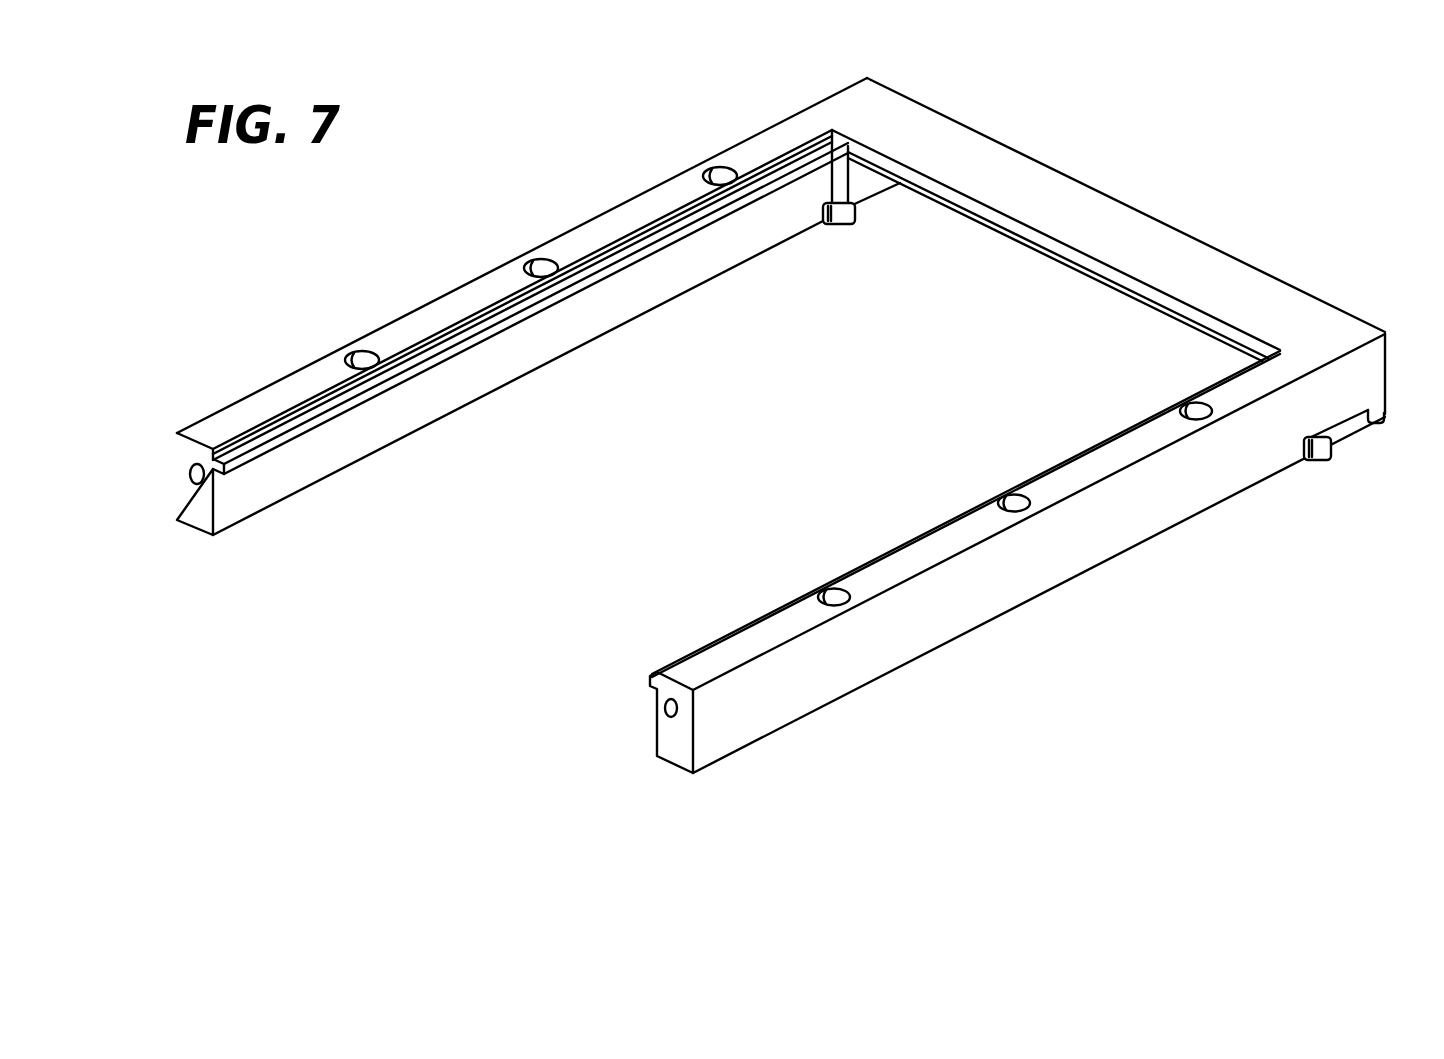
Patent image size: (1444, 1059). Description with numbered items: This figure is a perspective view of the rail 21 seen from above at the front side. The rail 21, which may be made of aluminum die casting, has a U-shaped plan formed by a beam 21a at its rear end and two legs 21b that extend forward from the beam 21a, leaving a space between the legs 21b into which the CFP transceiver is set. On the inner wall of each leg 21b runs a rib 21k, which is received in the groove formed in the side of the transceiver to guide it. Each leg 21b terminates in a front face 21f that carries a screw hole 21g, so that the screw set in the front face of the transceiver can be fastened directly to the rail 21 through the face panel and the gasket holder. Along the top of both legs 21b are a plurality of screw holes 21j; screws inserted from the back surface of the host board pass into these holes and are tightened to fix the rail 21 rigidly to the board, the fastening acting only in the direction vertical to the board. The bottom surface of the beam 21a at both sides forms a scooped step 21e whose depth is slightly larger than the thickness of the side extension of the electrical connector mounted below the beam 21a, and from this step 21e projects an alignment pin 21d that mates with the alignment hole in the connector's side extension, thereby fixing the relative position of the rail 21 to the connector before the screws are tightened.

The rail 21 is at (1200, 177).
The beam 21a is at (1072, 218).
The leg 21b is at (905, 563).
The alignment pin 21d is at (836, 228).
The scooped step 21e is at (1350, 433).
The front face 21f is at (192, 515).
The screw hole 21g is at (183, 452).
The screw hole 21j is at (535, 266).
The rib 21k is at (305, 430).